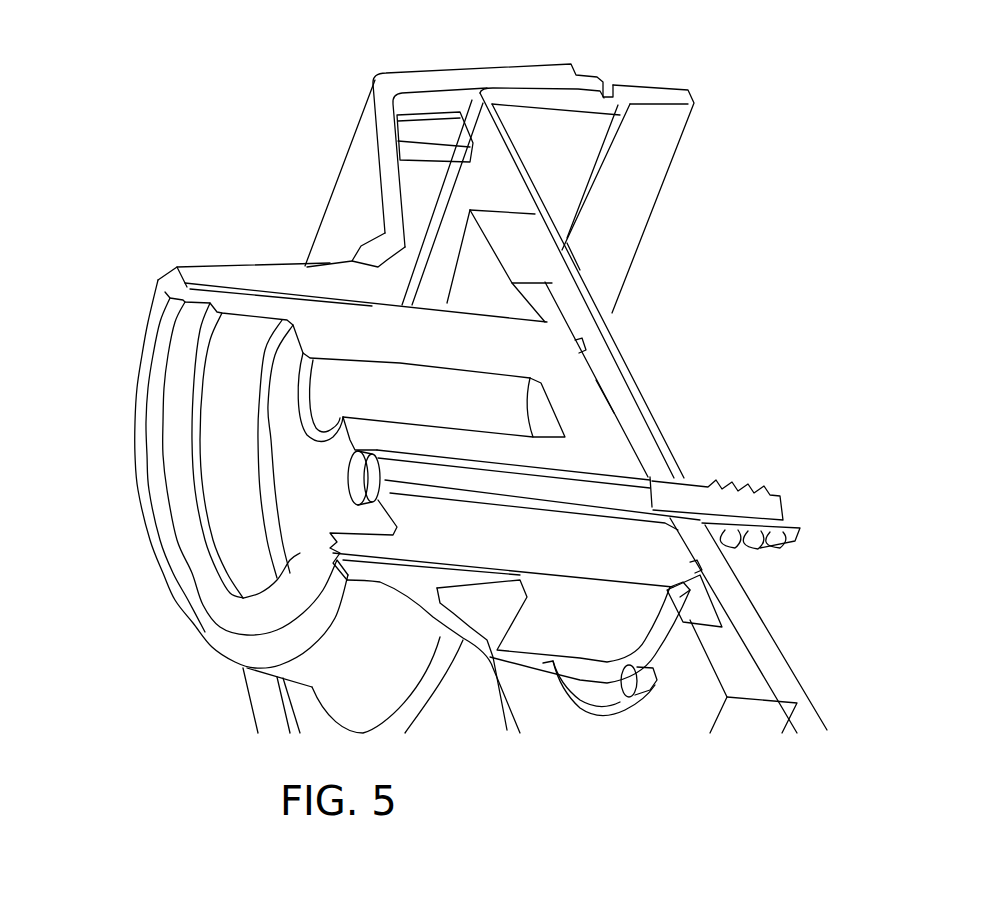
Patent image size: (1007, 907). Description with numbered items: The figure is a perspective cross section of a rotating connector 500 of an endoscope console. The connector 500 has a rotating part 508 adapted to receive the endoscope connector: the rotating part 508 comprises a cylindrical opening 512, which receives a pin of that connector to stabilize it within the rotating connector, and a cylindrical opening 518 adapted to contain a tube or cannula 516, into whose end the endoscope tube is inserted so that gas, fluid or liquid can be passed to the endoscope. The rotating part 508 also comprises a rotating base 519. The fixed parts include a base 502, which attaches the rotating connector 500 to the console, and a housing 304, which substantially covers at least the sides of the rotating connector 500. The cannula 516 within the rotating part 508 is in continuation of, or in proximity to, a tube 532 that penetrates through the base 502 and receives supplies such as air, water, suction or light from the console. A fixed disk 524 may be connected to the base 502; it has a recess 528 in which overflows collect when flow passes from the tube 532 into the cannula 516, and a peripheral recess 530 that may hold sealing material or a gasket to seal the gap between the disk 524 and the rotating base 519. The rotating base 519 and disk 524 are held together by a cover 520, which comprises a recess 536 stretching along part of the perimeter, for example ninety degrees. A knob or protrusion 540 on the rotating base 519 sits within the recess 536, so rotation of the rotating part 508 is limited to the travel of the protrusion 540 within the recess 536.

The rotating connector 500 is at (178, 95).
The housing 304 is at (447, 68).
The base 502 is at (692, 116).
The rotating part 508 is at (137, 372).
The cylindrical opening 512 is at (330, 398).
The cannula 516 is at (375, 490).
The cylindrical opening 518 is at (368, 476).
The rotating base 519 is at (707, 605).
The cover 520 is at (540, 268).
The disk 524 is at (605, 368).
The recess 528 is at (615, 410).
The peripheral recess 530 is at (586, 343).
The tube 532 is at (780, 490).
The recess 536 is at (583, 703).
The protrusion 540 is at (650, 690).